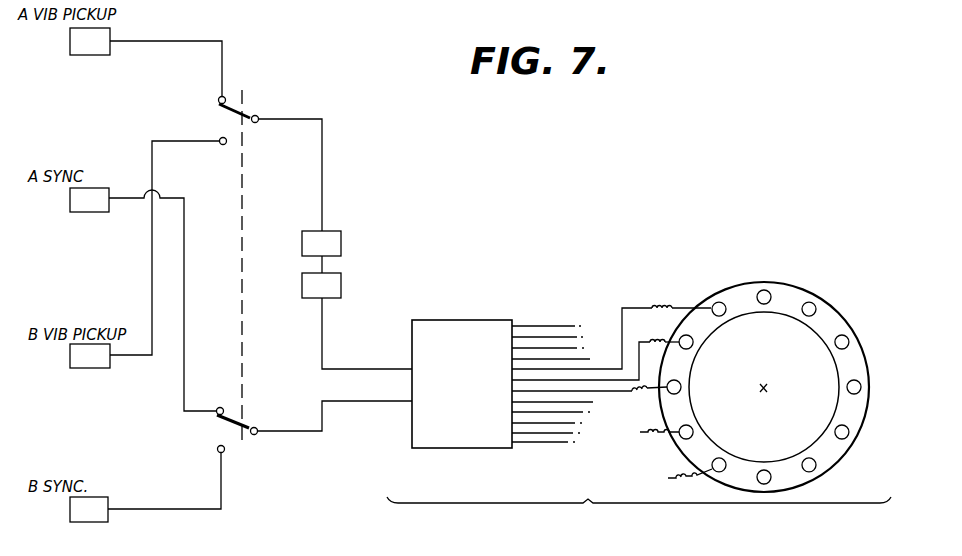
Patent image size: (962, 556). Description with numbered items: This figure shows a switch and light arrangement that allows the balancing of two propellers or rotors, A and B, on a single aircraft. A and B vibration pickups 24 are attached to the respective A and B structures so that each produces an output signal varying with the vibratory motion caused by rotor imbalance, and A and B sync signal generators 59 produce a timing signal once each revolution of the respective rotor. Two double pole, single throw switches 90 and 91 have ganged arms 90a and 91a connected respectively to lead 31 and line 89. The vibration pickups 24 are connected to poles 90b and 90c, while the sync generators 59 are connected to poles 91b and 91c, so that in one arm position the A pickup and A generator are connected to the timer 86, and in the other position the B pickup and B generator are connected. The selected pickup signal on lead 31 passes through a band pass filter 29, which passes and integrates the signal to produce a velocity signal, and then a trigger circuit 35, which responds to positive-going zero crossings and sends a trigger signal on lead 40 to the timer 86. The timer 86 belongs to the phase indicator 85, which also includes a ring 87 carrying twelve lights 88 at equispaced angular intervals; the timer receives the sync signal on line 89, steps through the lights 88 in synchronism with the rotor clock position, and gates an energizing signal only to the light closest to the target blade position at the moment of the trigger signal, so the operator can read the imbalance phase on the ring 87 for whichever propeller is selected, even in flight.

The vibration pickup 24 is at (83, 56).
The sync signal generator 59 is at (84, 213).
The band pass filter 29 is at (341, 248).
The trigger circuit 35 is at (341, 293).
The lead 31 is at (312, 117).
The lead 40 is at (345, 369).
The timer 86 is at (473, 320).
The phase indicator 85 is at (647, 408).
The ring 87 is at (850, 362).
The lights 88 is at (816, 312).
The line 89 is at (348, 402).
The double pole, single throw switch 90 is at (393, 172).
The switch arm 90a is at (258, 116).
The switch pole 90b is at (221, 96).
The switch pole 90c is at (224, 137).
The double pole, single throw switch 91 is at (469, 440).
The switch arm 91a is at (256, 428).
The switch pole 91b is at (216, 413).
The switch pole 91c is at (220, 452).